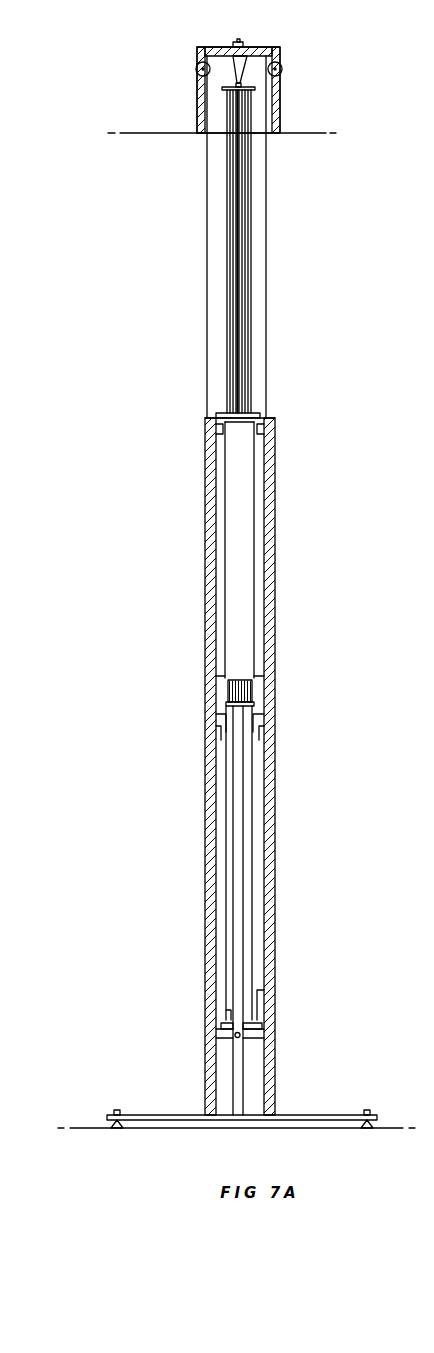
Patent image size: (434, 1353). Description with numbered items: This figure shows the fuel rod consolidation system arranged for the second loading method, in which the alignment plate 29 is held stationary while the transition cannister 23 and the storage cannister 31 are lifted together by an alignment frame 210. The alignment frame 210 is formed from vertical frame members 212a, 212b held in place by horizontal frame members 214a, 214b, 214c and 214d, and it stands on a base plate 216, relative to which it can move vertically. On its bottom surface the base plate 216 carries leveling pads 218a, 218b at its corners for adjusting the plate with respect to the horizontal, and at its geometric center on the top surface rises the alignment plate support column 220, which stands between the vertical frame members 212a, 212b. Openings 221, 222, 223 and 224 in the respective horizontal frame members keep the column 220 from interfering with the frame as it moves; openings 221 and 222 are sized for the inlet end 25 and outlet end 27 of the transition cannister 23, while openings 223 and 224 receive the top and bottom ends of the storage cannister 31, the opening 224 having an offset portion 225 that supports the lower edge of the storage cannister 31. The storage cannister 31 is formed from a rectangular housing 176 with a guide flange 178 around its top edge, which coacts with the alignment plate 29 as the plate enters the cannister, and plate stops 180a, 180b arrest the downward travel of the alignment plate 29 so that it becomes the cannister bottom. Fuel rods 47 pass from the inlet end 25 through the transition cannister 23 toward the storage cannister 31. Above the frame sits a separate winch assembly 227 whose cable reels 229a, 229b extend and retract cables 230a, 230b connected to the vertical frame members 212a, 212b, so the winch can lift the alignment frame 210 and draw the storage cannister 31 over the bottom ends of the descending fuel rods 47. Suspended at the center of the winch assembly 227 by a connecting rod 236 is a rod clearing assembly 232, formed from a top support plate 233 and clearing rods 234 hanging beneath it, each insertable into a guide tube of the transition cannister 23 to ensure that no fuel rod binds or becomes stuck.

The transition cannister 23 is at (246, 556).
The inlet end 25 is at (268, 413).
The outlet end 27 is at (253, 684).
The alignment plate 29 is at (255, 704).
The storage cannister 31 is at (226, 832).
The fuel rods 47 is at (228, 690).
The rectangular housing 176 is at (227, 975).
The guide flange 178 is at (258, 723).
The plate stop 180a is at (221, 1027).
The plate stop 180b is at (262, 1022).
The alignment frame 210 is at (186, 434).
The vertical frame member 212a is at (205, 512).
The vertical frame member 212b is at (272, 512).
The horizontal frame member 214a is at (268, 440).
The horizontal frame member 214b is at (216, 668).
The horizontal frame member 214c is at (218, 738).
The horizontal frame member 214d is at (270, 990).
The base plate 216 is at (150, 1114).
The leveling pad 218a is at (114, 1115).
The leveling pad 218b is at (368, 1110).
The alignment plate support column 220 is at (246, 1056).
The opening 221 is at (220, 436).
The opening 222 is at (256, 665).
The opening 223 is at (259, 740).
The opening 224 is at (230, 1010).
The offset portion 225 is at (235, 1035).
The winch assembly 227 is at (190, 57).
The cable reel 229a is at (196, 72).
The cable reel 229b is at (282, 72).
The cable 230a is at (207, 206).
The cable 230b is at (267, 212).
The rod clearing assembly 232 is at (254, 167).
The top support plate 233 is at (249, 87).
The clearing rods 234 is at (236, 266).
The connecting rod 236 is at (240, 62).